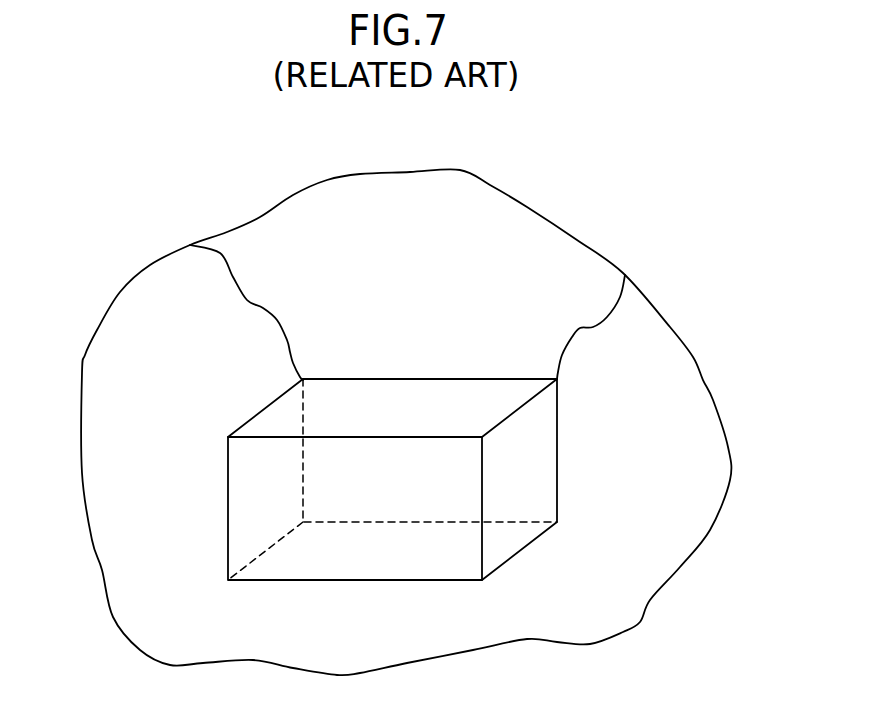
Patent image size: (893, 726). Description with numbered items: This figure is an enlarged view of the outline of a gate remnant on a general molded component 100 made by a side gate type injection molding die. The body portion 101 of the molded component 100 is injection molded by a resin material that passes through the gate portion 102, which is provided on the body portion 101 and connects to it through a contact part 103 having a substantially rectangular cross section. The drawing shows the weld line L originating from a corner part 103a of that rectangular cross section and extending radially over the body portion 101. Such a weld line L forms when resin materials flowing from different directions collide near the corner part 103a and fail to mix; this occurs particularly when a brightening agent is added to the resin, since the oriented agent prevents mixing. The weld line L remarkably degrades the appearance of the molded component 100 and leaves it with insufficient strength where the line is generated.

The molded component 100 is at (653, 288).
The body portion 101 is at (417, 192).
The gate portion 102 is at (362, 583).
The light emitting element side surface 103 is at (558, 485).
The upper edge corner of light emitting element 103a is at (300, 377).
The weld line L is at (219, 255).